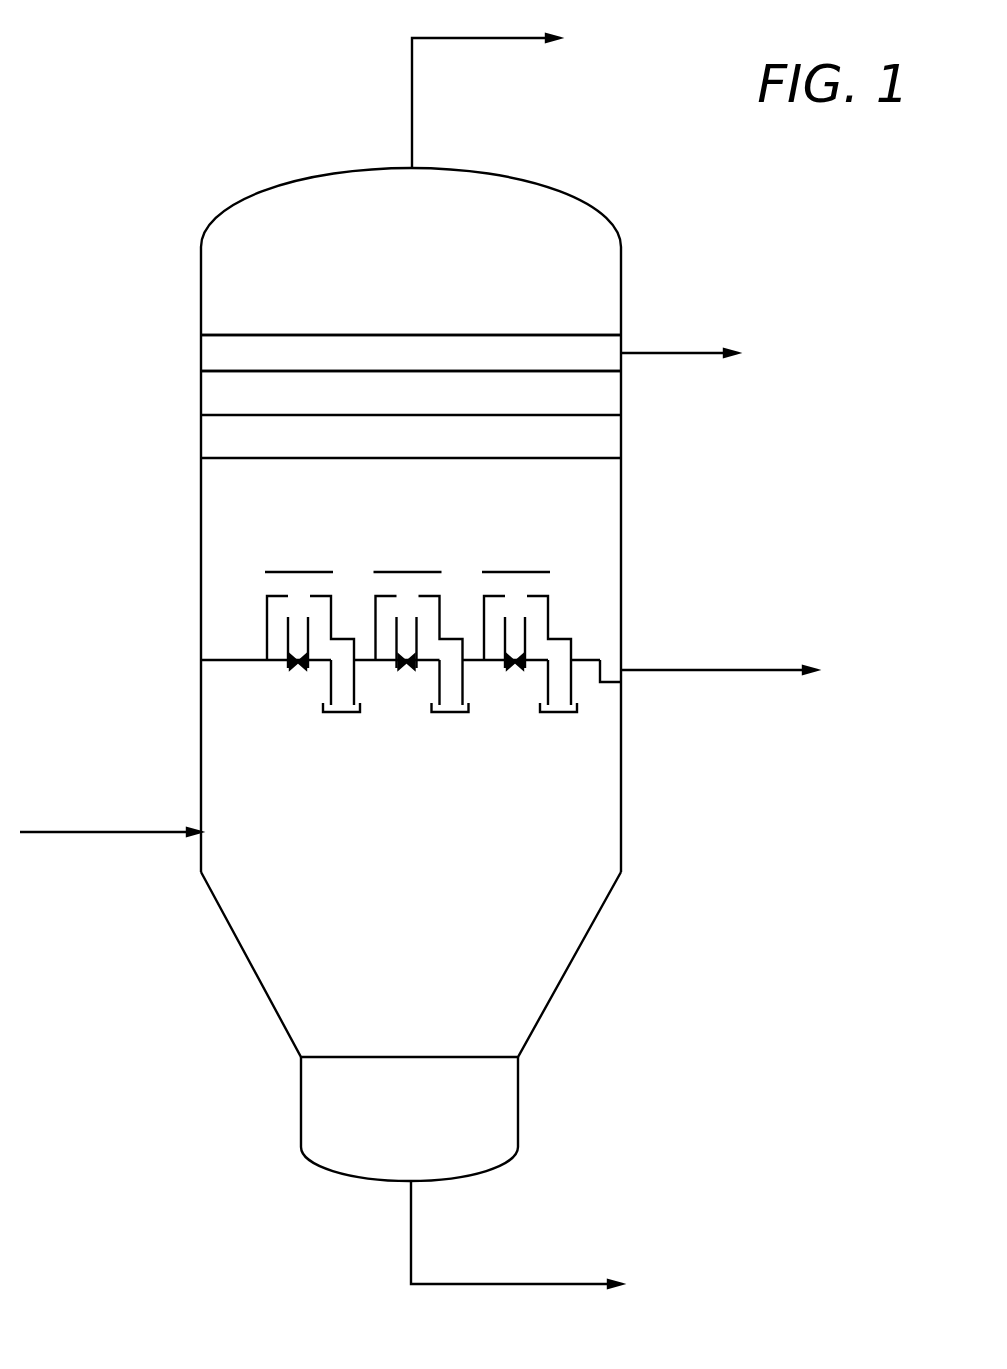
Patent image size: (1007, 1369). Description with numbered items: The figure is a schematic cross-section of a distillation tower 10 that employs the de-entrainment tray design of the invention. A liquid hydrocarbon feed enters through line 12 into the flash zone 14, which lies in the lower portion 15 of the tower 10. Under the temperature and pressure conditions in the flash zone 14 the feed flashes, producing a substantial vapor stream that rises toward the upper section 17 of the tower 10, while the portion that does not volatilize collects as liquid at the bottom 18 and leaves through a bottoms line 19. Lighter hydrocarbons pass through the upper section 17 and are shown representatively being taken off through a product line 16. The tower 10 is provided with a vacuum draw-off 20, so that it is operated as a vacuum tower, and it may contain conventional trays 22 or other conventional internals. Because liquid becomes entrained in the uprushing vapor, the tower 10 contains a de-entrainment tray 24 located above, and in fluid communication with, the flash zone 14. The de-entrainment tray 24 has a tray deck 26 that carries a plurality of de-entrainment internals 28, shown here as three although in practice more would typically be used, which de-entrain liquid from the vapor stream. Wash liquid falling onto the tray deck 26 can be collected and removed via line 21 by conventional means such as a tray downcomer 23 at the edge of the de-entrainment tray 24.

The distillation tower 10 is at (183, 300).
The line 12 is at (110, 830).
The flash zone 14 is at (417, 860).
The lower portion 15 is at (648, 833).
The product line 16 is at (673, 353).
The upper section 17 is at (195, 436).
The bottom 18 is at (535, 1121).
The bottoms line 19 is at (520, 1284).
The vacuum draw-off 20 is at (463, 37).
The line 21 is at (712, 670).
The trays 22 is at (412, 371).
The tray downcomer 23 is at (600, 672).
The de-entrainment tray 24 is at (235, 660).
The tray deck 26 is at (255, 664).
The de-entrainment internals 28 is at (557, 622).